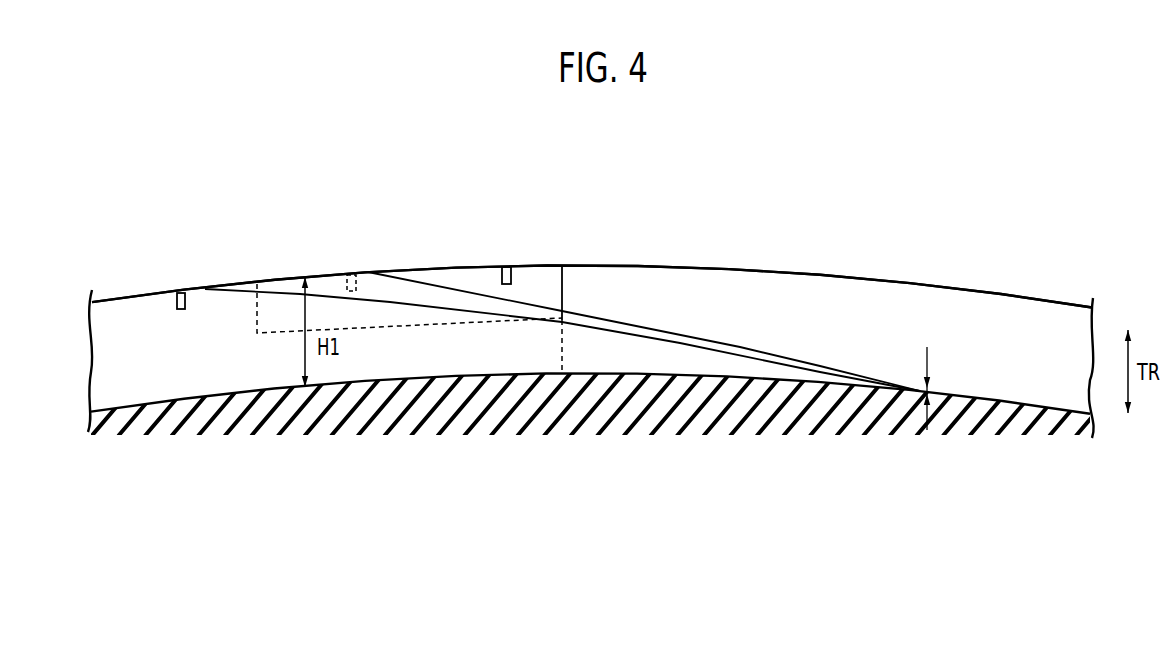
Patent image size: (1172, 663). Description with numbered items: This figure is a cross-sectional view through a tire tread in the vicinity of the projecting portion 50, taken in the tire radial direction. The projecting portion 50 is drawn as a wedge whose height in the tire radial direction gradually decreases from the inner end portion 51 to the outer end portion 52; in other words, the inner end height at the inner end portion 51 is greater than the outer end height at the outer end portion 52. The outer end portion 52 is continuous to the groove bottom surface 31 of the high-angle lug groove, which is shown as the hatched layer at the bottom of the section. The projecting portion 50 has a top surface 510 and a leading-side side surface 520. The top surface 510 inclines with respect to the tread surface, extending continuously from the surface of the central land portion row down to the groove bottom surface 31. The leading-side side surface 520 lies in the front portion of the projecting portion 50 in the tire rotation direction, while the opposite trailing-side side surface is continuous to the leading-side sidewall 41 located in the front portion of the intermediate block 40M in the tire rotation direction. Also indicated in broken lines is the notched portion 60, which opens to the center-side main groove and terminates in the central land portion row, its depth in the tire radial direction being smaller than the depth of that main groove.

The groove bottom surface 31 is at (1030, 397).
The intermediate block 40M is at (825, 272).
The leading-side sidewall 41 is at (1015, 310).
The projecting portion 50 is at (618, 322).
The inner end portion 51 is at (328, 275).
The top surface 510 is at (427, 297).
The leading-side side surface 520 is at (495, 350).
The outer end portion 52 is at (892, 373).
The notched portion 60 is at (262, 316).